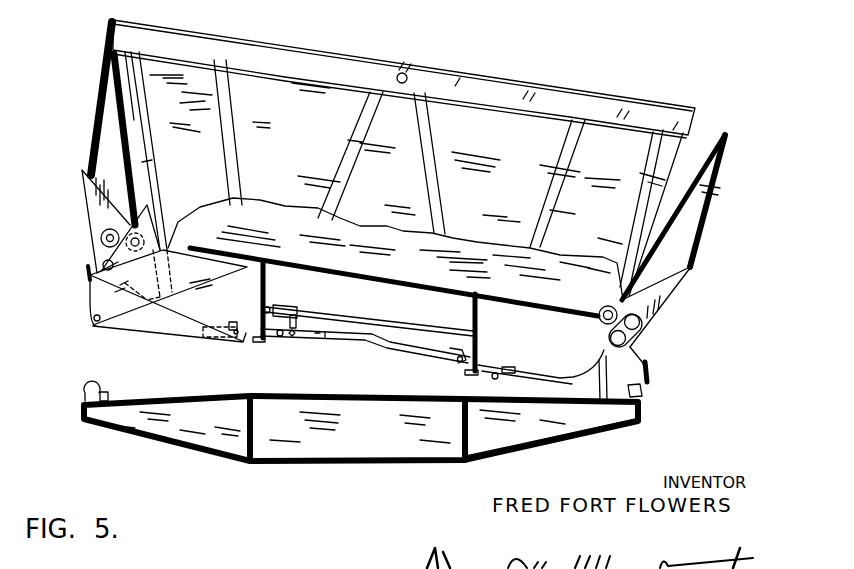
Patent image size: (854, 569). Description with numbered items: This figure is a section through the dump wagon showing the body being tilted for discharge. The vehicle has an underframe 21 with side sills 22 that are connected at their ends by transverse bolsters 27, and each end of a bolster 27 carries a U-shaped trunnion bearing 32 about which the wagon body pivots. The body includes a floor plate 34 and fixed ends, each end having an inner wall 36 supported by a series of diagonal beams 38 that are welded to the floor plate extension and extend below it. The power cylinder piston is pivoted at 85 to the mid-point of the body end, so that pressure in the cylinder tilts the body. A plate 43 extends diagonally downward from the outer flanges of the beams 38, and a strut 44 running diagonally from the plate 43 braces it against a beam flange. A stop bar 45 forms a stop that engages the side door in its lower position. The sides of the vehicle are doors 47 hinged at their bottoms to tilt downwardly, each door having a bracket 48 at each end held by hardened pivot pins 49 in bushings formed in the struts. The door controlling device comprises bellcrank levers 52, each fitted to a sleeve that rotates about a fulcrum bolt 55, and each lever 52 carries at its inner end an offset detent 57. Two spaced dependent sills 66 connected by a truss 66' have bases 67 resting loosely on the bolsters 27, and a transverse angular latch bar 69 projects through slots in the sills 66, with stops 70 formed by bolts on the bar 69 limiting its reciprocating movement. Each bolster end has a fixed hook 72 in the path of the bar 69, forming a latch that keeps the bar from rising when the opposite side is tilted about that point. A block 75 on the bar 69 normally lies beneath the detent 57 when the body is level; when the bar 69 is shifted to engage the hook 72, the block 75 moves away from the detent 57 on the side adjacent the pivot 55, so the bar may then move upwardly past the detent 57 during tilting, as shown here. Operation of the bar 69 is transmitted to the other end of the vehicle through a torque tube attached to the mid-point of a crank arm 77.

The underframe 21 is at (350, 394).
The side sill 22 is at (461, 427).
The transverse bolster 27 is at (572, 432).
The U-shaped trunnion bearing 32 is at (110, 393).
The floor plate 34 is at (398, 287).
The inner wall 36 is at (495, 92).
The diagonal beam 38 is at (655, 152).
The plate 43 is at (103, 290).
The strut 44 is at (133, 217).
The stop bar 45 is at (93, 270).
The door 47 is at (95, 123).
The bracket 48 is at (97, 215).
The pivot pin 49 is at (603, 307).
The bellcrank lever 52 is at (168, 326).
The fulcrum bolt 55 is at (92, 322).
The offset detent 57 is at (233, 321).
The dependent sill 66 is at (390, 316).
The truss 66' is at (369, 311).
The base 67 is at (259, 344).
The latch bar 69 is at (345, 337).
The stop 70 is at (291, 338).
The fixed hook 72 is at (86, 383).
The block 75 is at (222, 346).
The crank arm 77 is at (295, 322).
The piston pivot 85 is at (404, 72).